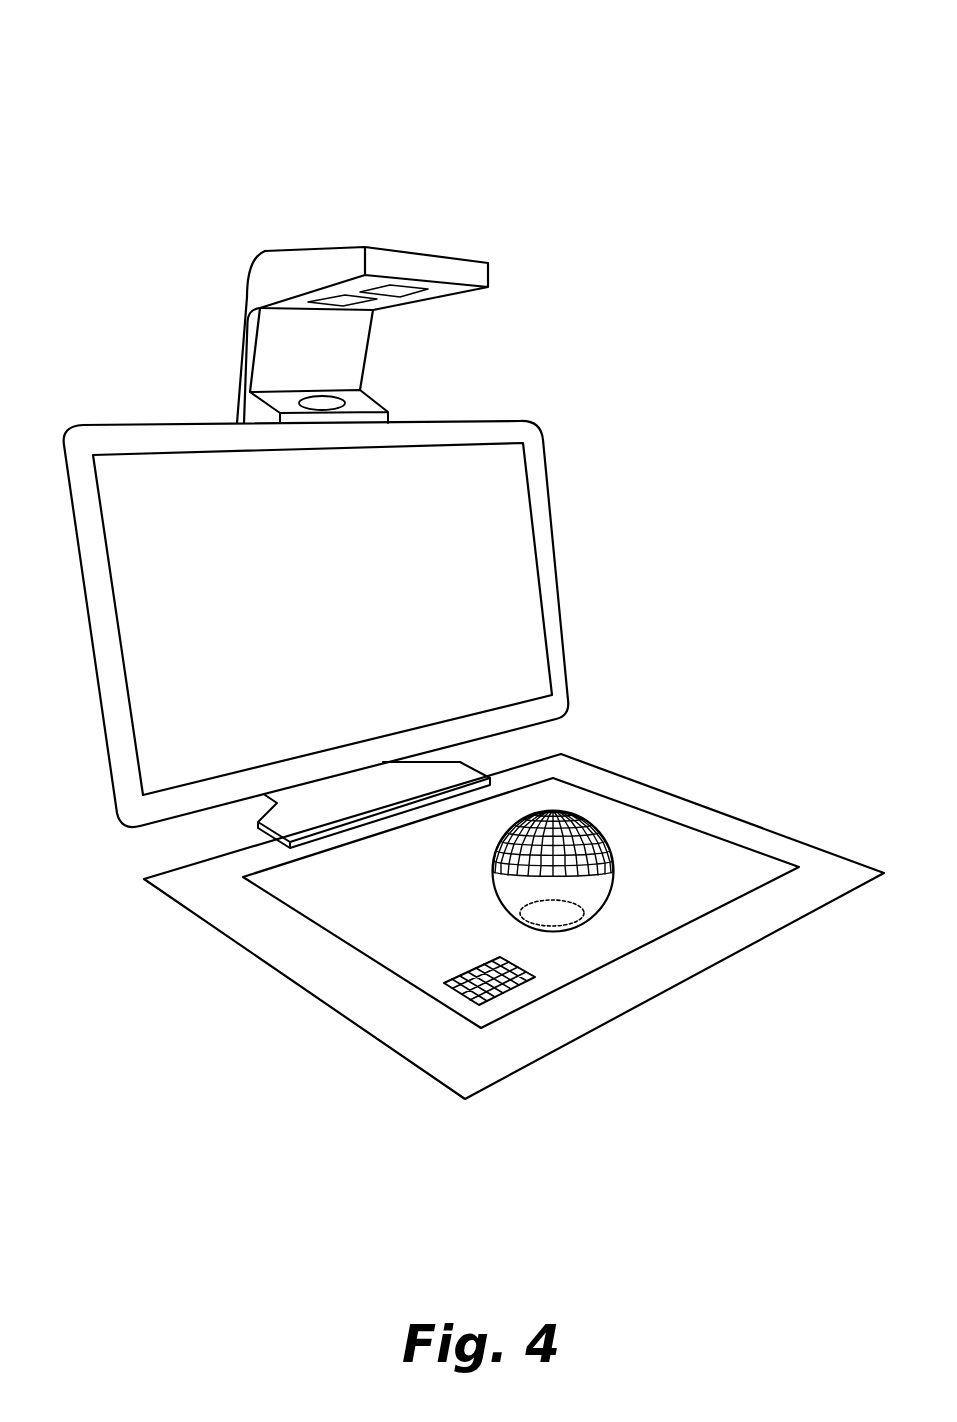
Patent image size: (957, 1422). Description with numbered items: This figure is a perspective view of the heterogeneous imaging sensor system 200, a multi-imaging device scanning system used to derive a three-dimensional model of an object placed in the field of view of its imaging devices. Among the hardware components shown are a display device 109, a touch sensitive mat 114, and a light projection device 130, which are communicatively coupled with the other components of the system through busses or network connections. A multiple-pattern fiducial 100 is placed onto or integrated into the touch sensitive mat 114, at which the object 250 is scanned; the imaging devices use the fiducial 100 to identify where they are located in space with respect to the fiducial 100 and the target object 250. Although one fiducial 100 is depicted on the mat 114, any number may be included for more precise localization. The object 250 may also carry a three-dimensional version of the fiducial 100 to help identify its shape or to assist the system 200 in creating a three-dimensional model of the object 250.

The heterogeneous imaging sensor system 200 is at (149, 57).
The light projection device 130 is at (340, 297).
The display device 109 is at (487, 503).
The touch sensitive mat 114 is at (494, 1085).
The multiple-pattern fiducial 100 is at (600, 853).
The object 250 is at (603, 895).